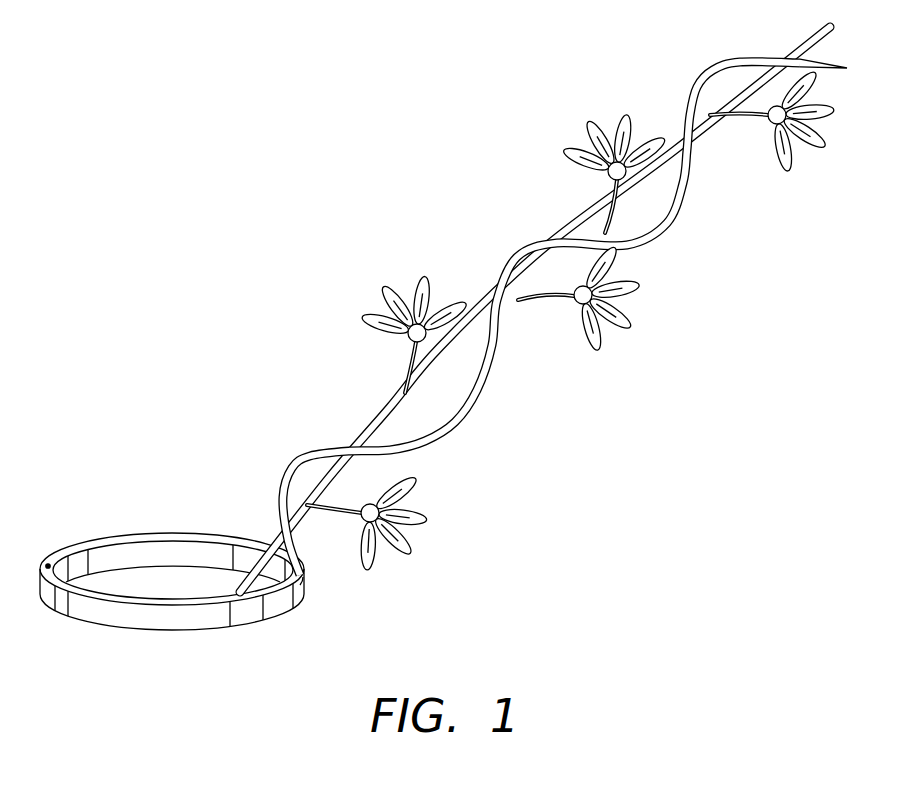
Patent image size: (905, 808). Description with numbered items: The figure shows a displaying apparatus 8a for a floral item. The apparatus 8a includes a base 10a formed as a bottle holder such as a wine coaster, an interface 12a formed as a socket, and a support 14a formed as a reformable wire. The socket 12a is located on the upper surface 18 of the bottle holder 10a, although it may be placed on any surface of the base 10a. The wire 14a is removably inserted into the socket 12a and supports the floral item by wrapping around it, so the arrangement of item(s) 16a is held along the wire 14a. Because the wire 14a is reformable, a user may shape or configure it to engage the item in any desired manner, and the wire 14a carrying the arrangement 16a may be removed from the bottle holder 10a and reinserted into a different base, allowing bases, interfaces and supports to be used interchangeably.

The displaying apparatus 8a is at (256, 310).
The base 10a is at (253, 623).
The interface 12a is at (303, 580).
The support 14a is at (477, 420).
The arrangement of item(s) 16a is at (377, 417).
The upper surface 18 is at (50, 563).